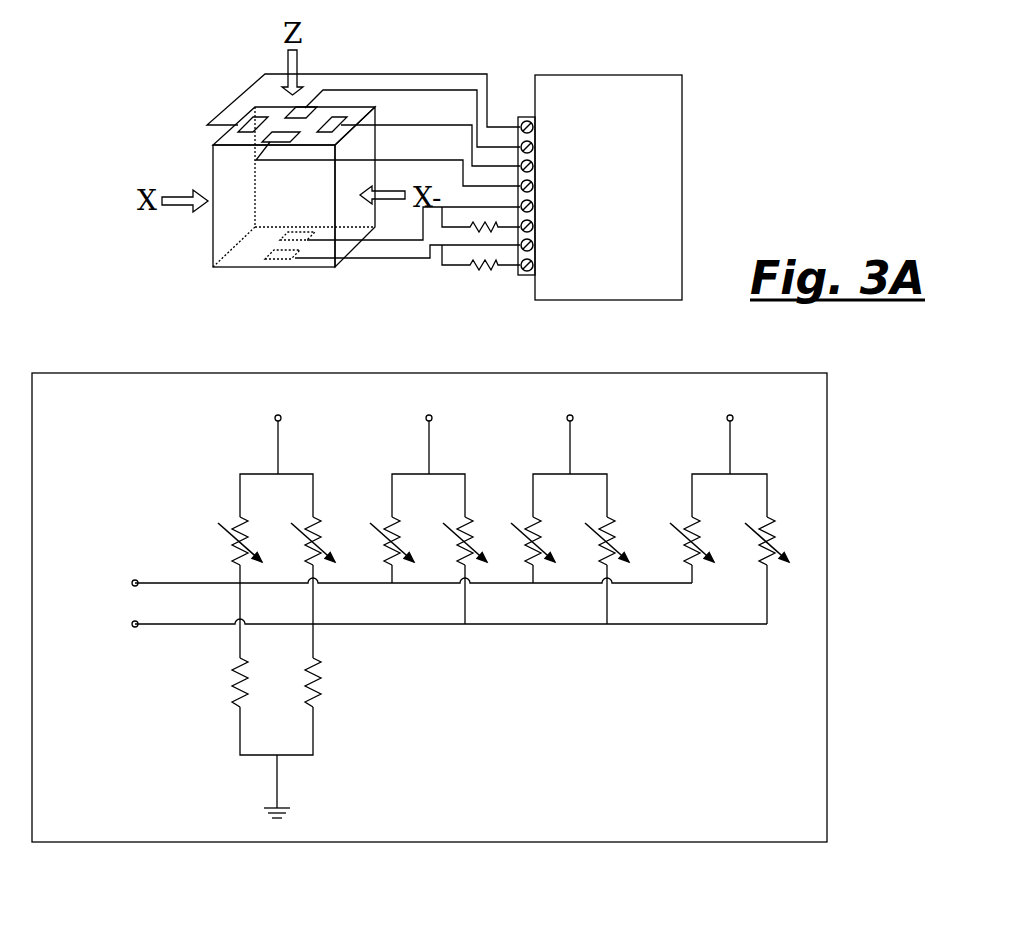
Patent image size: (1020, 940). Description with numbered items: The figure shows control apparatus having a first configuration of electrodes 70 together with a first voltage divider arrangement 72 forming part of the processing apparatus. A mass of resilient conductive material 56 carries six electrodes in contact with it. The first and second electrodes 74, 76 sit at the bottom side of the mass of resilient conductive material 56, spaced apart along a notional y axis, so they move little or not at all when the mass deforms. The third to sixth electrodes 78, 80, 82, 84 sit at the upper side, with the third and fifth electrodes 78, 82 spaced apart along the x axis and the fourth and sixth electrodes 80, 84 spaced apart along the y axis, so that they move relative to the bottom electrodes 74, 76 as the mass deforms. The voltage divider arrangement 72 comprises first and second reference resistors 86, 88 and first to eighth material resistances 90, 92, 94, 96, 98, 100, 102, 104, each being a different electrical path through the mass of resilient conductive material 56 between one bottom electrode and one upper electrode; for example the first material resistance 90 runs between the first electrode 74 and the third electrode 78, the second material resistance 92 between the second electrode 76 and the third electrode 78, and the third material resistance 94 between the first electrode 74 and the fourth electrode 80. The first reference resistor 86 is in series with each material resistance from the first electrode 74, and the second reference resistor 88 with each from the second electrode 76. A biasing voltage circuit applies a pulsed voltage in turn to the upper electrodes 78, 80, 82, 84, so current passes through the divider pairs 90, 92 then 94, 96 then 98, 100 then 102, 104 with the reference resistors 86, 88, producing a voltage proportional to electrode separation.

The mass of resilient conductive material 56 is at (232, 219).
The first configuration of electrodes 70 is at (708, 106).
The voltage divider arrangement 72 is at (662, 199).
The first electrode 74 is at (275, 258).
The second electrode 76 is at (305, 240).
The third electrode 78 is at (253, 121).
The fourth electrode 80 is at (289, 116).
The fifth electrode 82 is at (333, 127).
The sixth electrode 84 is at (273, 137).
The first reference resistor 86 is at (240, 685).
The second reference resistor 88 is at (313, 685).
The first material resistance 90 is at (207, 509).
The second material resistance 92 is at (319, 496).
The third material resistance 94 is at (381, 598).
The fourth material resistance 96 is at (454, 598).
The fifth material resistance 98 is at (522, 598).
The sixth material resistance 100 is at (595, 598).
The seventh material resistance 102 is at (679, 598).
The eighth material resistance 104 is at (756, 598).